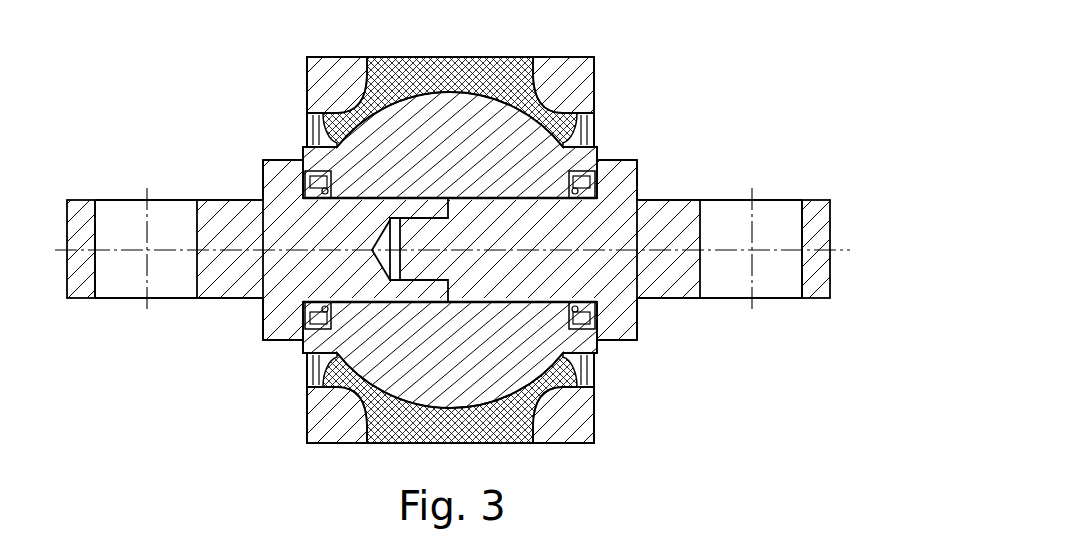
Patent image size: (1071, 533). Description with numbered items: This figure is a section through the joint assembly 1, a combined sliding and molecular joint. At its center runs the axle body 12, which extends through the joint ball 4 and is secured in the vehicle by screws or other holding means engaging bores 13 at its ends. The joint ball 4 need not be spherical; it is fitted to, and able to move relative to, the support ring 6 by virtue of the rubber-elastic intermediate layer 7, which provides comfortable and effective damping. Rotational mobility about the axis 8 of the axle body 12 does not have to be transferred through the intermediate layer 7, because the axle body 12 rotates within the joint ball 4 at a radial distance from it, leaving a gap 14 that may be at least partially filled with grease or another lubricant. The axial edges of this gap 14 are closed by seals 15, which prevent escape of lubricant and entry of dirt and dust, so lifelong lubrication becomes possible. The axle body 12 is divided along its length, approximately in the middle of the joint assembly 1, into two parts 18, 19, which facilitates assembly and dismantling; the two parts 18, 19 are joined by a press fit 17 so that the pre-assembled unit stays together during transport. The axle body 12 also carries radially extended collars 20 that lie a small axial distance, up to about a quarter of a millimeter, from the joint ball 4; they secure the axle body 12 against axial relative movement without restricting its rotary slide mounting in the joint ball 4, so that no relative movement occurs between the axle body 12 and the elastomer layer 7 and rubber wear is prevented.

The joint assembly 1 is at (142, 80).
The joint ball 4 is at (493, 140).
The support ring 6 is at (328, 84).
The rubber-elastic intermediate layer 7 is at (468, 60).
The axis 8 is at (690, 248).
The axle body 12 is at (537, 211).
The bore 13 is at (142, 287).
The gap 14 is at (518, 310).
The seal 15 is at (306, 190).
The press fit 17 is at (413, 278).
The first part of the axle body 18 is at (237, 275).
The second part of the axle body 19 is at (645, 225).
The collar 20 is at (605, 182).